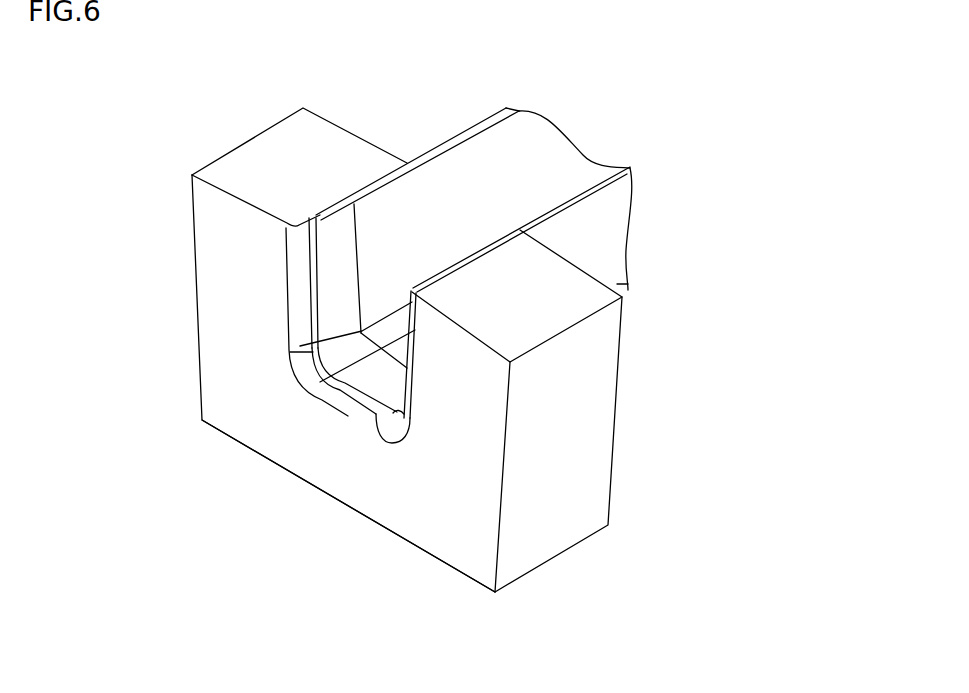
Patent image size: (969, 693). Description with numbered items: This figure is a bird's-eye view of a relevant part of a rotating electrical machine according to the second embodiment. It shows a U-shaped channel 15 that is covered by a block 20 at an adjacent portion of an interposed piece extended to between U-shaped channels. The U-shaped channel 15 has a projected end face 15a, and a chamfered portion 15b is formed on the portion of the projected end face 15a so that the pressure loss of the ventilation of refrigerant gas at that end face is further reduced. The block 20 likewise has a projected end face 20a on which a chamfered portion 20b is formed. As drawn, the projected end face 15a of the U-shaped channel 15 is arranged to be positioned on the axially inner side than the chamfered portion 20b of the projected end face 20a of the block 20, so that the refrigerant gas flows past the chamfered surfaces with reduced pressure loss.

The U-shaped channel 15 is at (595, 235).
The projected end face 15a is at (315, 279).
The chamfered portion 15b is at (338, 277).
The block 20 is at (548, 493).
The projected end face 20a is at (447, 480).
The chamfered portion 20b is at (297, 303).